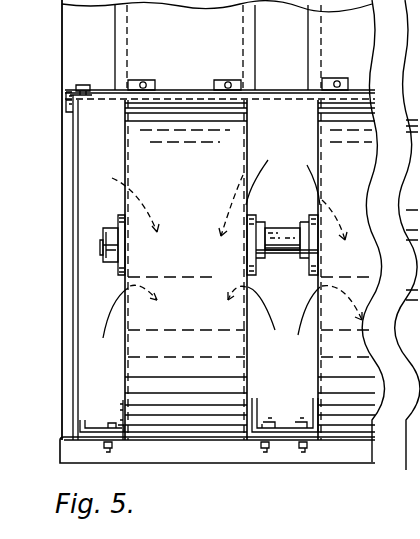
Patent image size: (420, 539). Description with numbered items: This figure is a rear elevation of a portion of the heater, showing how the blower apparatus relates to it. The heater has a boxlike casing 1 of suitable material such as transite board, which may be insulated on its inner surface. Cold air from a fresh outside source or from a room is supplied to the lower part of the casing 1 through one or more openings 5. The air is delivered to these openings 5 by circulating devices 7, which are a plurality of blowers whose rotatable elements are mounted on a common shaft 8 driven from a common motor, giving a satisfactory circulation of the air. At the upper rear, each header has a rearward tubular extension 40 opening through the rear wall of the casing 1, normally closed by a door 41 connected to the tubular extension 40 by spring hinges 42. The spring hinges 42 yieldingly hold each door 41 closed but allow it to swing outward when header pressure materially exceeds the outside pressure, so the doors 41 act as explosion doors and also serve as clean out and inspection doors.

The casing 1 is at (62, 42).
The openings 5 is at (249, 249).
The circulating devices 7 is at (132, 163).
The common shaft 8 is at (286, 232).
The tubular extension 40 is at (128, 42).
The door 41 is at (308, 50).
The spring hinges 42 is at (222, 79).